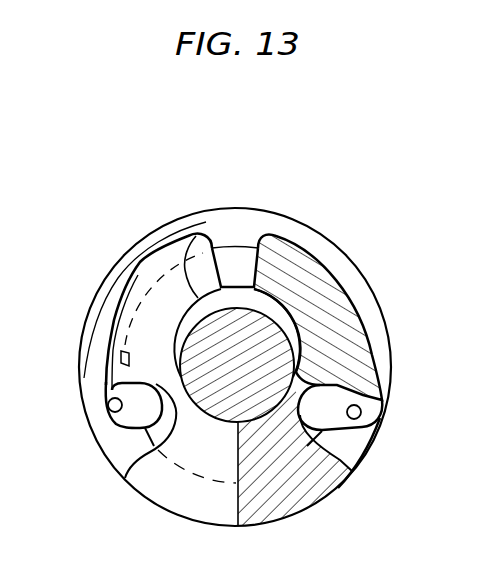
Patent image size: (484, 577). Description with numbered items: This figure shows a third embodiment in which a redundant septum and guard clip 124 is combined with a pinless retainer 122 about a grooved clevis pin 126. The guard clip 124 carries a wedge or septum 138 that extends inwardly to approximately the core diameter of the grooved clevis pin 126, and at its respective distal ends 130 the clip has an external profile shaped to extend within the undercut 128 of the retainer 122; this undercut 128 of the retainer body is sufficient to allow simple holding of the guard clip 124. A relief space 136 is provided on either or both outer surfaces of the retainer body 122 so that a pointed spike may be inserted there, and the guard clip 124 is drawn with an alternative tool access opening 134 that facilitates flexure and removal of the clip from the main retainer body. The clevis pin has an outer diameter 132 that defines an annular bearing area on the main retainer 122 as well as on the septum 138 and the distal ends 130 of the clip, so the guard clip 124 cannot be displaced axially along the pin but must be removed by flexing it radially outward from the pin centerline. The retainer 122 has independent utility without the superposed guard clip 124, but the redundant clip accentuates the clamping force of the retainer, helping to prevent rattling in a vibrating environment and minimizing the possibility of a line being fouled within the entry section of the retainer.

The pinless retainer 122 is at (226, 453).
The guard clip 124 is at (162, 226).
The grooved clevis pin 126 is at (254, 378).
The undercut 128 is at (220, 306).
The distal ends 130 is at (122, 427).
The outer diameter 132 is at (157, 268).
The tool access opening 134 is at (104, 399).
The relief space 136 is at (110, 347).
The septum 138 is at (237, 287).